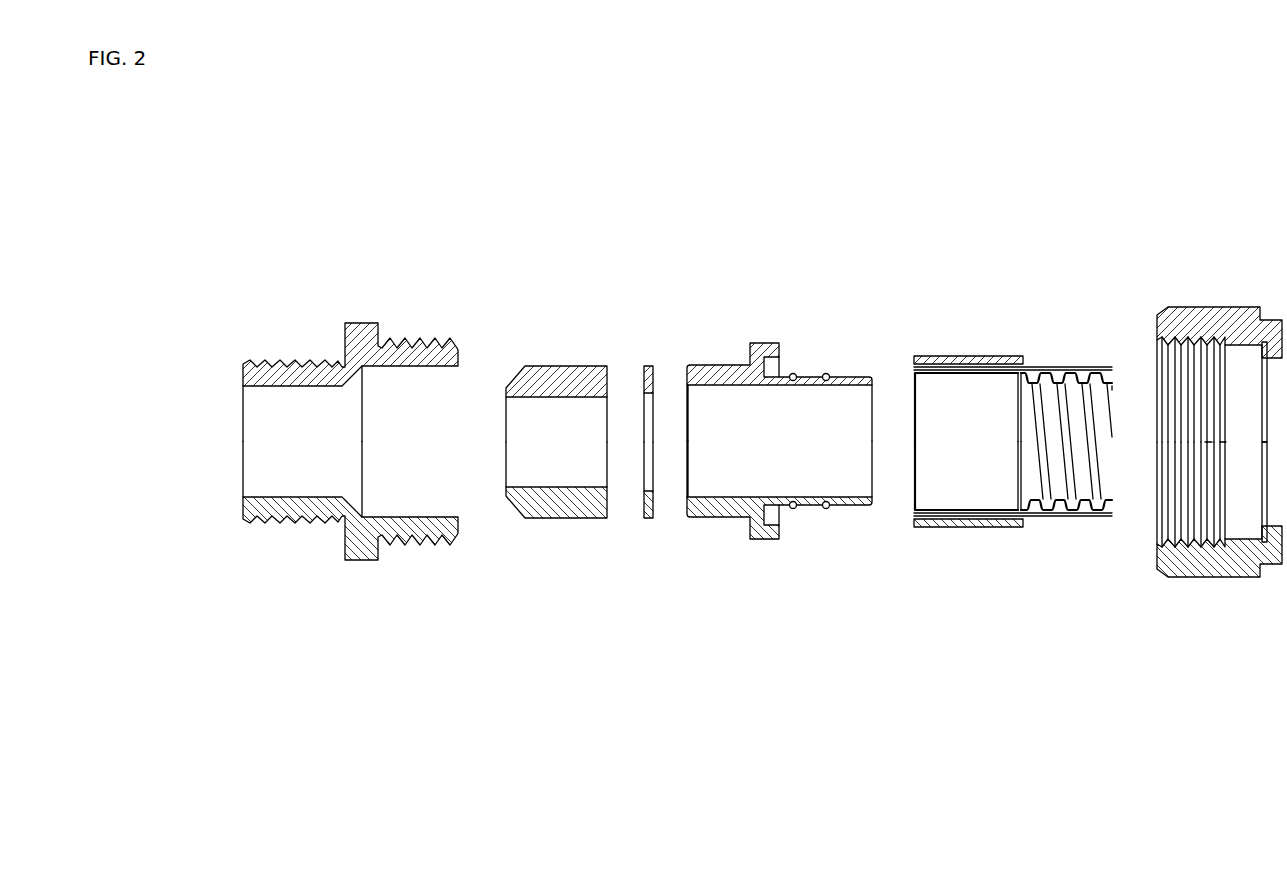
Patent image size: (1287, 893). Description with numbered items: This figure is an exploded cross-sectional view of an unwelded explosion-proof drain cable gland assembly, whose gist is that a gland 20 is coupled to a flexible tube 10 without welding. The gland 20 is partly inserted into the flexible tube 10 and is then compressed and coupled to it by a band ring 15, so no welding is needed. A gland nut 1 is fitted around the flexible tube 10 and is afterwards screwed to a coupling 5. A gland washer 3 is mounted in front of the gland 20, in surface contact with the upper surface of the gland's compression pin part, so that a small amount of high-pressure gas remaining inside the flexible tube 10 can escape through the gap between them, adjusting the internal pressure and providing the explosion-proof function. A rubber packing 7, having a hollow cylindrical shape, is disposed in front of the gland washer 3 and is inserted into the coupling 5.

The gland nut 1 is at (1211, 308).
The gland washer 3 is at (648, 370).
The coupling 5 is at (305, 333).
The rubber packing 7 is at (567, 370).
The flexible tube 10 is at (925, 333).
The band ring 15 is at (981, 355).
The gland 20 is at (729, 334).